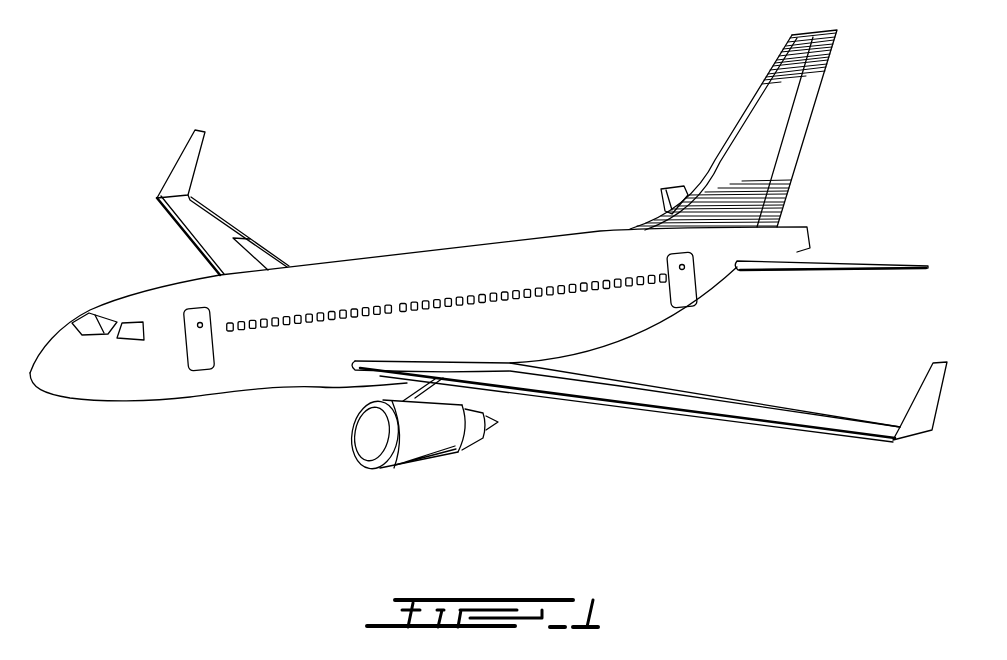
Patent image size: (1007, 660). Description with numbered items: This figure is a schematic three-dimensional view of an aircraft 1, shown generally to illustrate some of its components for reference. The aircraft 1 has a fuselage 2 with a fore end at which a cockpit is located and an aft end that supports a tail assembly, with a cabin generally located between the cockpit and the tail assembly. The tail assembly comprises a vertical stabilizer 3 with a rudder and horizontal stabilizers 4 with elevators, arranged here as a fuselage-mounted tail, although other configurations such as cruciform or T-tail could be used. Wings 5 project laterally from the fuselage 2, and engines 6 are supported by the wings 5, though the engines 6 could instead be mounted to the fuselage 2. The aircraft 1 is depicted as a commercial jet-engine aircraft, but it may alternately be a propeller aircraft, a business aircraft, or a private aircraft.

The aircraft 1 is at (402, 190).
The fuselage 2 is at (250, 371).
The vertical stabilizer 3 is at (755, 127).
The horizontal stabilizers 4 is at (663, 197).
The wings 5 is at (212, 235).
The engines 6 is at (455, 446).